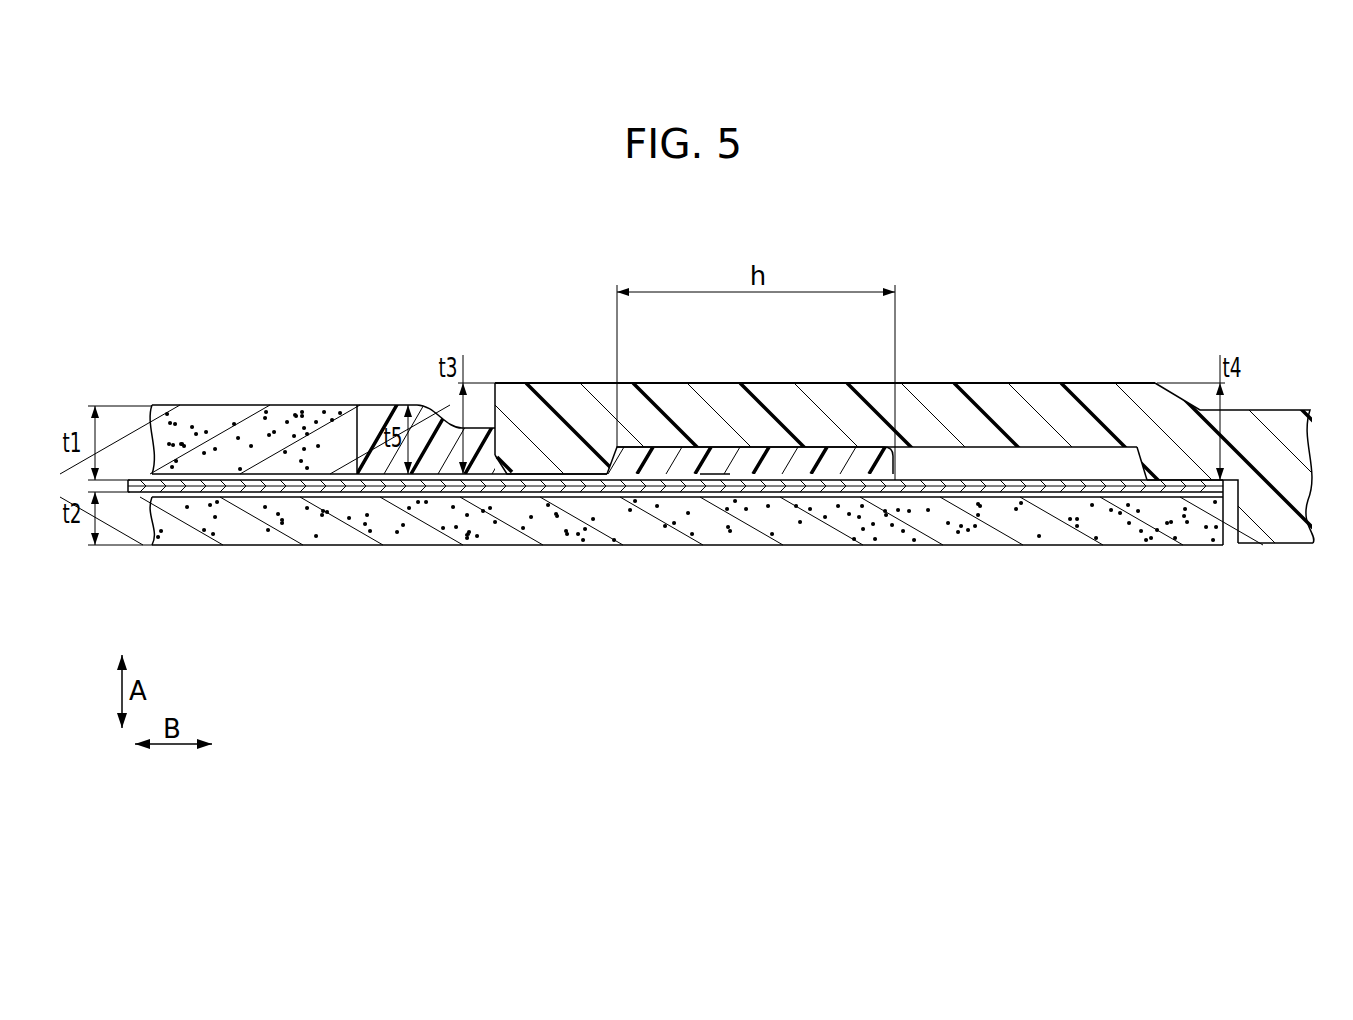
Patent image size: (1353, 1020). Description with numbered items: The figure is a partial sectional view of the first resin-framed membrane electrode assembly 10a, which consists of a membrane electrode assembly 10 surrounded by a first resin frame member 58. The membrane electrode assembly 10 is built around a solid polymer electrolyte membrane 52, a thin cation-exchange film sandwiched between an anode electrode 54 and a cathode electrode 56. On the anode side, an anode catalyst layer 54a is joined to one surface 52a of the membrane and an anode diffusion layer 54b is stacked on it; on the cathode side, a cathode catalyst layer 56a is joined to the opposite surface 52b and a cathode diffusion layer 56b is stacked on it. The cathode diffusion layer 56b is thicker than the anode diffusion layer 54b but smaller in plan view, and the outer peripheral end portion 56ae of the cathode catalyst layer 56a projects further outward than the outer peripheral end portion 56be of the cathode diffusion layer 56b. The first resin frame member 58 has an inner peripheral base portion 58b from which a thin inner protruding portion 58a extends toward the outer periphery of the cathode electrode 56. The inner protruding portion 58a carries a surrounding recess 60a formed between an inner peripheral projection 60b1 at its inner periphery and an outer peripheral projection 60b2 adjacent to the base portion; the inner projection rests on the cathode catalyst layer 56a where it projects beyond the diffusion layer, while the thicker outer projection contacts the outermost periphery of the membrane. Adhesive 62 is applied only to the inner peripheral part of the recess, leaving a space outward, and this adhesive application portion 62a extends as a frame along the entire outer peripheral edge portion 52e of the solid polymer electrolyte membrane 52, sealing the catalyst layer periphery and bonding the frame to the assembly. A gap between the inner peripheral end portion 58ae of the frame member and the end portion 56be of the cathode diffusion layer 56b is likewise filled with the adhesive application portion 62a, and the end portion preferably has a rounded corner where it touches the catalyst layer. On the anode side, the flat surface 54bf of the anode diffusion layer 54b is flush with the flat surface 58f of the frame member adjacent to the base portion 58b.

The membrane electrode assembly 10 is at (566, 556).
The first resin-framed membrane electrode assembly 10a is at (794, 187).
The solid polymer electrolyte membrane 52 is at (131, 489).
The surface of the solid polymer electrolyte membrane 52a is at (138, 494).
The surface of the solid polymer electrolyte membrane 52b is at (133, 479).
The outer peripheral edge portion of the solid polymer electrolyte membrane 52e is at (852, 493).
The anode electrode 54 is at (360, 618).
The anode catalyst layer 54a is at (335, 496).
The anode diffusion layer 54b is at (253, 525).
The flat surface of the anode diffusion layer 54bf is at (1022, 547).
The cathode electrode 56 is at (330, 358).
The cathode catalyst layer 56a is at (313, 479).
The outer peripheral end portion of the cathode catalyst layer 56ae is at (716, 470).
The cathode diffusion layer 56b is at (232, 414).
The outer peripheral end portion of the cathode diffusion layer 56be is at (362, 424).
The first resin frame member 58 is at (1131, 370).
The inner protruding portion 58a is at (767, 383).
The inner peripheral end portion of the first resin frame member 58ae is at (495, 440).
The inner peripheral base portion 58b is at (1236, 530).
The flat surface of the first resin frame member 58f is at (1289, 547).
The surrounding recess 60a is at (1043, 447).
The inner peripheral projection 60b1 is at (587, 460).
The outer peripheral projection 60b2 is at (1172, 463).
The adhesive 62 is at (422, 412).
The adhesive application portion 62a is at (835, 460).